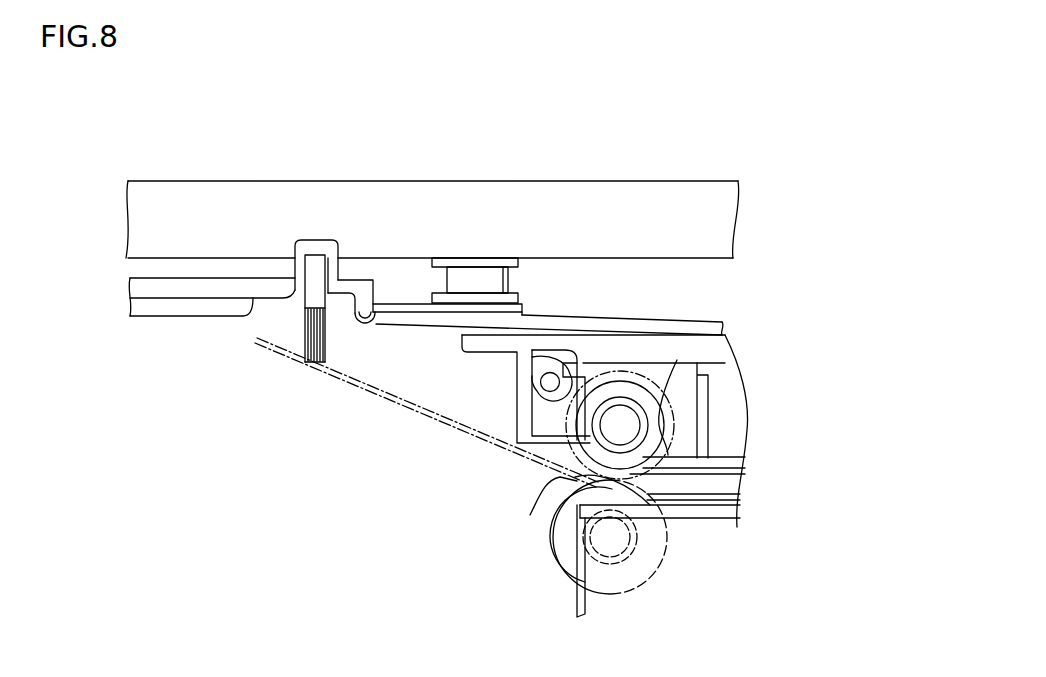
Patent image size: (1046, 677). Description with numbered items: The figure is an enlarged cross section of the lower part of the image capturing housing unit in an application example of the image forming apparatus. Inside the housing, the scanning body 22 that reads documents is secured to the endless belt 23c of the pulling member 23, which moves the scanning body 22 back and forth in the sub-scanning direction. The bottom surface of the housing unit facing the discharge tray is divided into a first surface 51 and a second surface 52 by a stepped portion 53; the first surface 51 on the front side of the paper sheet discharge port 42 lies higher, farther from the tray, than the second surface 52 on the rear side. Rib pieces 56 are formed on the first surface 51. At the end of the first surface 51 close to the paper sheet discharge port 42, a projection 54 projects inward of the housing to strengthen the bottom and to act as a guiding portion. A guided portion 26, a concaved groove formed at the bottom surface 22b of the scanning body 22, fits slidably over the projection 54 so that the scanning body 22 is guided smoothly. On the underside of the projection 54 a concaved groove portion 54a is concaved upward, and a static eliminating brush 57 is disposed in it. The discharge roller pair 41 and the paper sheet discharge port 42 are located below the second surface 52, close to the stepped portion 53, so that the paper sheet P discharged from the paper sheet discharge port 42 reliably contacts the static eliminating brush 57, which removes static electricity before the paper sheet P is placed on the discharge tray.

The scanning body 22 is at (679, 197).
The bottom surface of the scanning body 22b is at (161, 260).
The pulling member 23 is at (519, 278).
The endless belt 23c is at (476, 282).
The guided portion 26 is at (309, 239).
The discharge roller pair 41 is at (618, 422).
The paper sheet discharge port 42 is at (562, 479).
The first surface 51 is at (233, 299).
The second surface 52 is at (428, 328).
The stepped portion 53 is at (393, 325).
The projection 54 is at (332, 296).
The concaved groove portion 54a is at (328, 335).
The rib pieces 56 is at (195, 317).
The static eliminating brush 57 is at (304, 336).
The paper sheet P is at (370, 390).